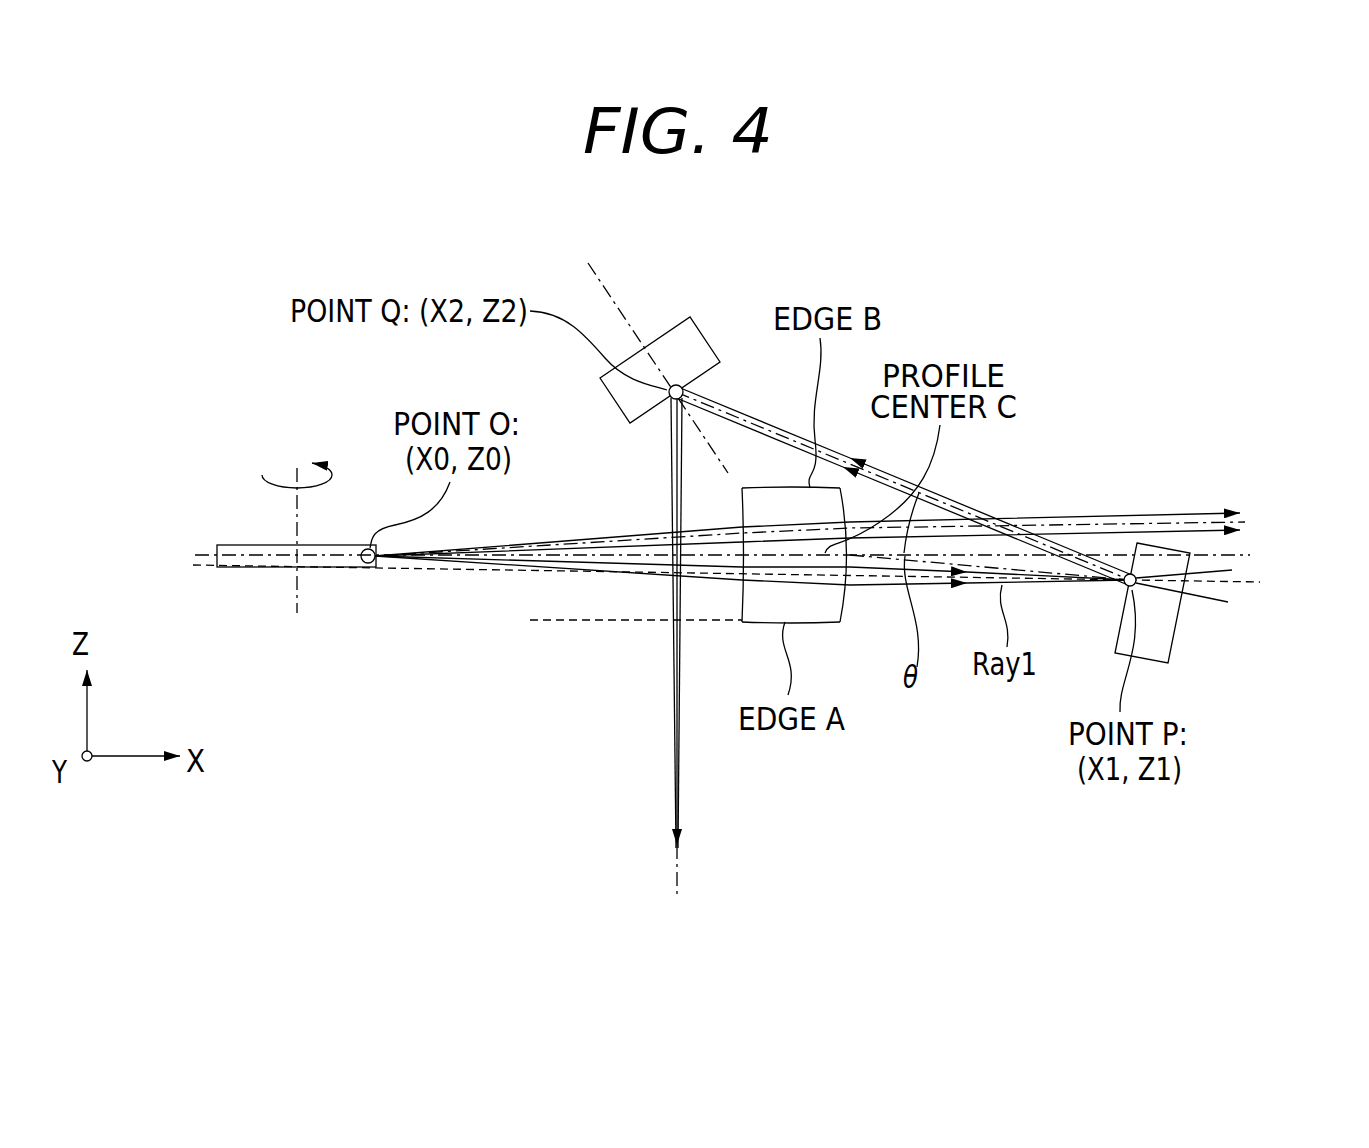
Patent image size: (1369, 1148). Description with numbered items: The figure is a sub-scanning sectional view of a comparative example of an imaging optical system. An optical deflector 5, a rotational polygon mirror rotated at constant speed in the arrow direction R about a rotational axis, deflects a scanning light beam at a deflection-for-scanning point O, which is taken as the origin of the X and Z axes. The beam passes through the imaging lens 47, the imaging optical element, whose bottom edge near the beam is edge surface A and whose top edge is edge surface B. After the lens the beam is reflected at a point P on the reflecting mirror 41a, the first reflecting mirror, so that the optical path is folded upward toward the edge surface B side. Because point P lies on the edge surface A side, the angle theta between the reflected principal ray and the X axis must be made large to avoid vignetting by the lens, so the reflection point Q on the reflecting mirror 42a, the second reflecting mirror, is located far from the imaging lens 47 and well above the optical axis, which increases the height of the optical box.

The optical deflector 5 is at (340, 567).
The reflecting mirror 41a is at (1168, 640).
The reflecting mirror 42a is at (710, 352).
The imaging lens 47 is at (775, 507).